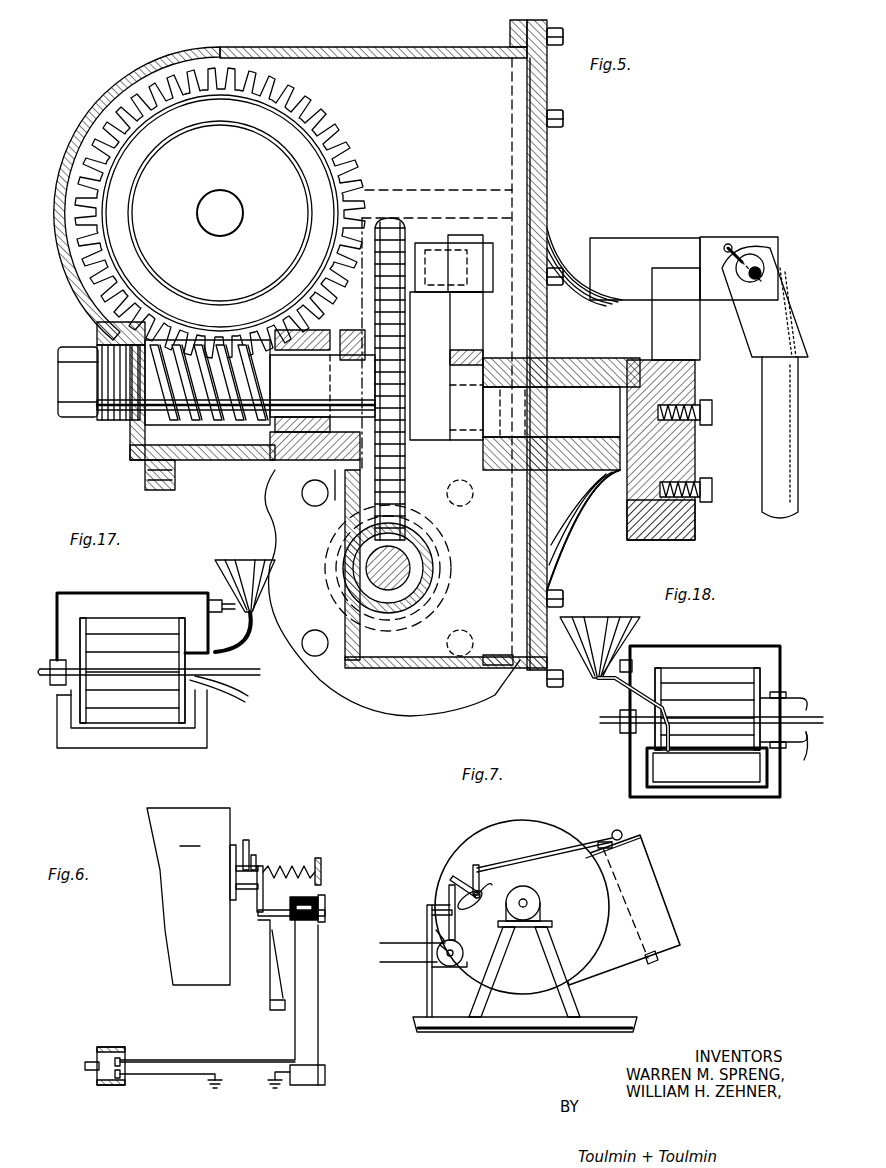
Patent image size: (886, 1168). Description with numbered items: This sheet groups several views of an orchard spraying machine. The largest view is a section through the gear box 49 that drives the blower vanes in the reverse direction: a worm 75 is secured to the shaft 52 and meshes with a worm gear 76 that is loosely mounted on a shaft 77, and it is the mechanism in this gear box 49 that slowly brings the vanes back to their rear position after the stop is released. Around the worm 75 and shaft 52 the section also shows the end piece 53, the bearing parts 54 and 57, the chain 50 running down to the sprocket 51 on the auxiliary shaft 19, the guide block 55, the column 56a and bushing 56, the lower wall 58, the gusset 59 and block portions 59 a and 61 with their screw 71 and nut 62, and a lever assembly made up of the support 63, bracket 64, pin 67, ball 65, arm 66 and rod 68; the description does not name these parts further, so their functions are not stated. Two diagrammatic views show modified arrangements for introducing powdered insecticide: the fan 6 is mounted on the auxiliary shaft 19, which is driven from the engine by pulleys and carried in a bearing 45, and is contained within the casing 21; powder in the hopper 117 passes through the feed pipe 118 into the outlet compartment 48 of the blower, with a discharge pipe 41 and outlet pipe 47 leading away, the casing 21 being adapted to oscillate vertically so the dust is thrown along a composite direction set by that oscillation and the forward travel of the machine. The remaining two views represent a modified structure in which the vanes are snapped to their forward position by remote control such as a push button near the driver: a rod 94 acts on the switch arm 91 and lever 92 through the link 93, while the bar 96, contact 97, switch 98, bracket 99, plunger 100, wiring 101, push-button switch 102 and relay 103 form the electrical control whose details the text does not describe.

In FIG. 5, the gear box 49 is at (375, 60).
In FIG. 5, the worm gear 76 is at (320, 125).
In FIG. 5, the shaft 77 is at (232, 205).
In FIG. 5, the worm shaft end 53 is at (118, 420).
In FIG. 5, the worm 75 is at (220, 430).
In FIG. 5, the shaft 52 is at (312, 386).
In FIG. 5, the worm housing bearing 54 is at (285, 445).
In FIG. 5, the chain 50 is at (408, 380).
In FIG. 5, the chain guide block 55 is at (437, 260).
In FIG. 5, the guide column 56a is at (460, 318).
In FIG. 5, the guide bushing 56 is at (458, 386).
In FIG. 5, the shaft housing 57 is at (588, 412).
In FIG. 5, the lower housing wall 58 is at (580, 462).
In FIG. 5, the gusset 59 is at (557, 550).
In FIG. 5, the bearing block lower part 59a is at (640, 540).
In FIG. 5, the bearing block 61 is at (698, 375).
In FIG. 5, the set screw 71 is at (700, 398).
In FIG. 5, the lock nut 62 is at (712, 426).
In FIG. 5, the lever support 63 is at (640, 257).
In FIG. 5, the lever bracket 64 is at (722, 243).
In FIG. 5, the pivot pin 67 is at (738, 246).
In FIG. 5, the ball joint 65 is at (764, 262).
In FIG. 5, the lever arm 66 is at (778, 315).
In FIG. 5, the lever rod 68 is at (798, 425).
In FIG. 5, the sprocket 51 is at (432, 555).
In FIG. 5, the auxiliary shaft 19 is at (372, 578).
In FIG. 17, the auxiliary shaft 19 is at (68, 660).
In FIG. 18, the auxiliary shaft 19 is at (610, 716).
In FIG. 17, the casing 21 is at (145, 596).
In FIG. 18, the casing 21 is at (758, 648).
In FIG. 6, the casing 21 is at (188, 896).
In FIG. 7, the casing 21 is at (585, 845).
In FIG. 17, the fan 6 is at (148, 632).
In FIG. 18, the fan 6 is at (730, 680).
In FIG. 17, the shaft bearing 45 is at (52, 660).
In FIG. 18, the shaft bearing 45 is at (622, 730).
In FIG. 17, the outlet compartment 48 is at (200, 728).
In FIG. 18, the outlet compartment 48 is at (768, 783).
In FIG. 7, the outlet compartment 48 is at (670, 905).
In FIG. 17, the outlet pipe 47 is at (240, 700).
In FIG. 18, the outlet pipe 47 is at (798, 740).
In FIG. 17, the hopper 117 is at (240, 570).
In FIG. 18, the hopper 117 is at (578, 622).
In FIG. 17, the feed pipe 118 is at (222, 600).
In FIG. 18, the feed pipe 118 is at (630, 655).
In FIG. 18, the discharge pipe 41 is at (794, 698).
In FIG. 6, the switch arm 91 is at (247, 840).
In FIG. 7, the switch arm 91 is at (478, 868).
In FIG. 6, the switch lever 92 is at (256, 858).
In FIG. 7, the switch lever 92 is at (456, 880).
In FIG. 7, the pivot link 93 is at (477, 900).
In FIG. 7, the actuating rod 94 is at (555, 850).
In FIG. 7, the switch bar 96 is at (449, 898).
In FIG. 6, the switch contact 97 is at (325, 908).
In FIG. 7, the switch contact 97 is at (462, 955).
In FIG. 6, the switch 98 is at (318, 898).
In FIG. 7, the switch 98 is at (452, 942).
In FIG. 6, the switch bracket 99 is at (258, 914).
In FIG. 6, the spring plunger 100 is at (263, 886).
In FIG. 7, the spring plunger 100 is at (436, 924).
In FIG. 6, the wiring 101 is at (296, 1042).
In FIG. 6, the switch 102 is at (118, 1047).
In FIG. 6, the relay 103 is at (305, 1085).